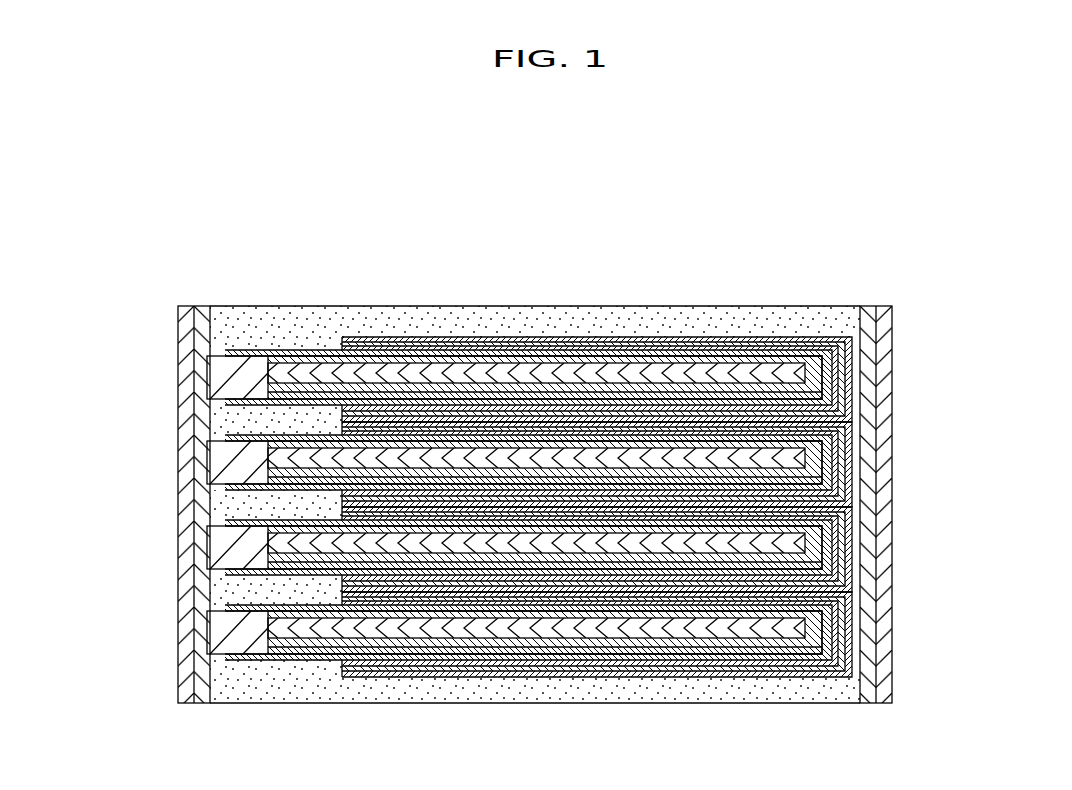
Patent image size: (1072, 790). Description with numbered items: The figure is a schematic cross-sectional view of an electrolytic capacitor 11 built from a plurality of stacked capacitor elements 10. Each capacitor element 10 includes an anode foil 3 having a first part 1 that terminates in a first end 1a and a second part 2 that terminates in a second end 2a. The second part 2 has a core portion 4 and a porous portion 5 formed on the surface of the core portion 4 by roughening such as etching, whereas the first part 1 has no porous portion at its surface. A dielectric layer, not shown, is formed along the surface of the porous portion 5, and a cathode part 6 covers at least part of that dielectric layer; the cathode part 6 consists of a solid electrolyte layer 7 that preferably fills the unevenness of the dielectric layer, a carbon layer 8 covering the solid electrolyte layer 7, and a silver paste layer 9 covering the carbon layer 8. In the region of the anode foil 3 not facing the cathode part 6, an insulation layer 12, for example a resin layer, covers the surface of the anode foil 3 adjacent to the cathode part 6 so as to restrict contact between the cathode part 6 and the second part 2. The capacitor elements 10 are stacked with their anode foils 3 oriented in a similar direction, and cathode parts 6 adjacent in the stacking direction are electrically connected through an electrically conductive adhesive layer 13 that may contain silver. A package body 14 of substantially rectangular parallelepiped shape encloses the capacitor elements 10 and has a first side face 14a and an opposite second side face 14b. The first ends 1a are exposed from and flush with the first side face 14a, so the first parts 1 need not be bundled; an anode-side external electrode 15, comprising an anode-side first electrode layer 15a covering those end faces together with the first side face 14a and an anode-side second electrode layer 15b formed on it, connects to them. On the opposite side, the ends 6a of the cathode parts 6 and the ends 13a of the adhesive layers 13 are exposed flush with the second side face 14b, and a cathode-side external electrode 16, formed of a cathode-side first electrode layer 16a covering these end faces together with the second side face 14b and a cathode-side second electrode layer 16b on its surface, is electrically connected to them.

The first part 1 is at (218, 370).
The first end 1a is at (212, 380).
The second part 2 is at (545, 429).
The second end 2a is at (891, 366).
The anode foil 3 is at (514, 408).
The core portion 4 is at (300, 372).
The porous portion 5 is at (275, 237).
The cathode part 6 is at (658, 440).
The end of cathode part 6a is at (890, 467).
The solid electrolyte layer 7 is at (465, 337).
The carbon layer 8 is at (537, 345).
The silver paste layer 9 is at (470, 237).
The capacitor element 10 is at (800, 333).
The electrolytic capacitor 11 is at (847, 181).
The insulation layer 12 is at (252, 423).
The adhesive layer 13 is at (663, 392).
The end of adhesive layer 13a is at (884, 416).
The package body 14 is at (722, 325).
The first side face 14a is at (180, 677).
The second side face 14b is at (886, 685).
The anode-side external electrode 15 is at (93, 518).
The anode-side first electrode layer 15a is at (184, 553).
The anode-side second electrode layer 15b is at (184, 617).
The cathode-side external electrode 16 is at (980, 518).
The cathode-side first electrode layer 16a is at (886, 552).
The cathode-side second electrode layer 16b is at (886, 617).